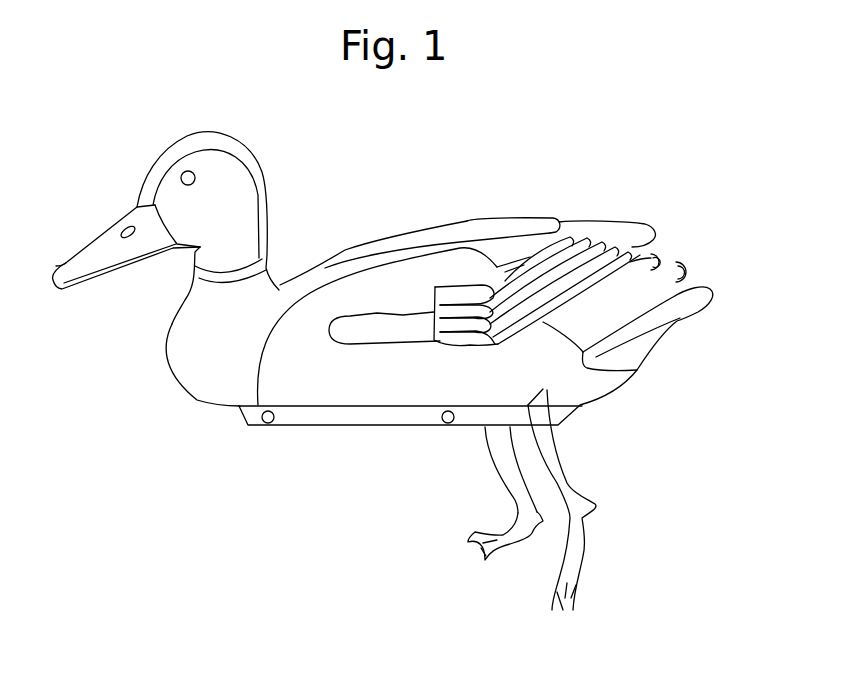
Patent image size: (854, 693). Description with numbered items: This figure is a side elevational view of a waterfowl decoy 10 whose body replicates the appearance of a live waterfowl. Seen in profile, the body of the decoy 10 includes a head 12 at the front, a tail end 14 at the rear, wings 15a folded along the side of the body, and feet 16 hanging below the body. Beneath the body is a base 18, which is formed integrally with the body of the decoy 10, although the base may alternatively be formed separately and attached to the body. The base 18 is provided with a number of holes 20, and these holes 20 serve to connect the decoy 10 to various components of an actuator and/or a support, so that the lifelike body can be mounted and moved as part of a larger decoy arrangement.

The decoy 10 is at (679, 179).
The head 12 is at (170, 158).
The tail end 14 is at (697, 281).
The wings 15a is at (465, 266).
The feet 16 is at (578, 553).
The base 18 is at (357, 417).
The holes 20 is at (268, 423).